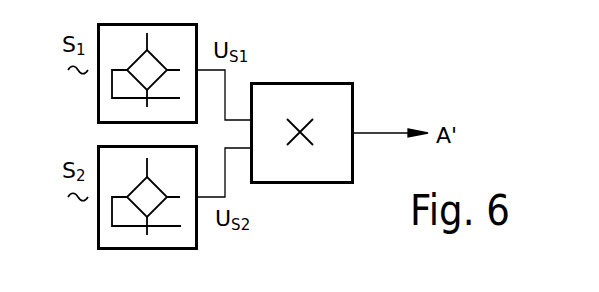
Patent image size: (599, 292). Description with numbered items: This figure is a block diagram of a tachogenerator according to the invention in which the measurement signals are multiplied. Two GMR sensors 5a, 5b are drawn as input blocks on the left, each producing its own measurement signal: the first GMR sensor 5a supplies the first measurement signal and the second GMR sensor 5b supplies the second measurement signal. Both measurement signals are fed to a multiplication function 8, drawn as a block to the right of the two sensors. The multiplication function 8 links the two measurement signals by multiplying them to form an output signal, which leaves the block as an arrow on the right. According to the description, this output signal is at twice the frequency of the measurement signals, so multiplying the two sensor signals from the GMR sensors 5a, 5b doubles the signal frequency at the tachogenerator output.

The GMR sensor 5a is at (98, 88).
The GMR sensor 5b is at (98, 218).
The multiplication function 8 is at (322, 82).